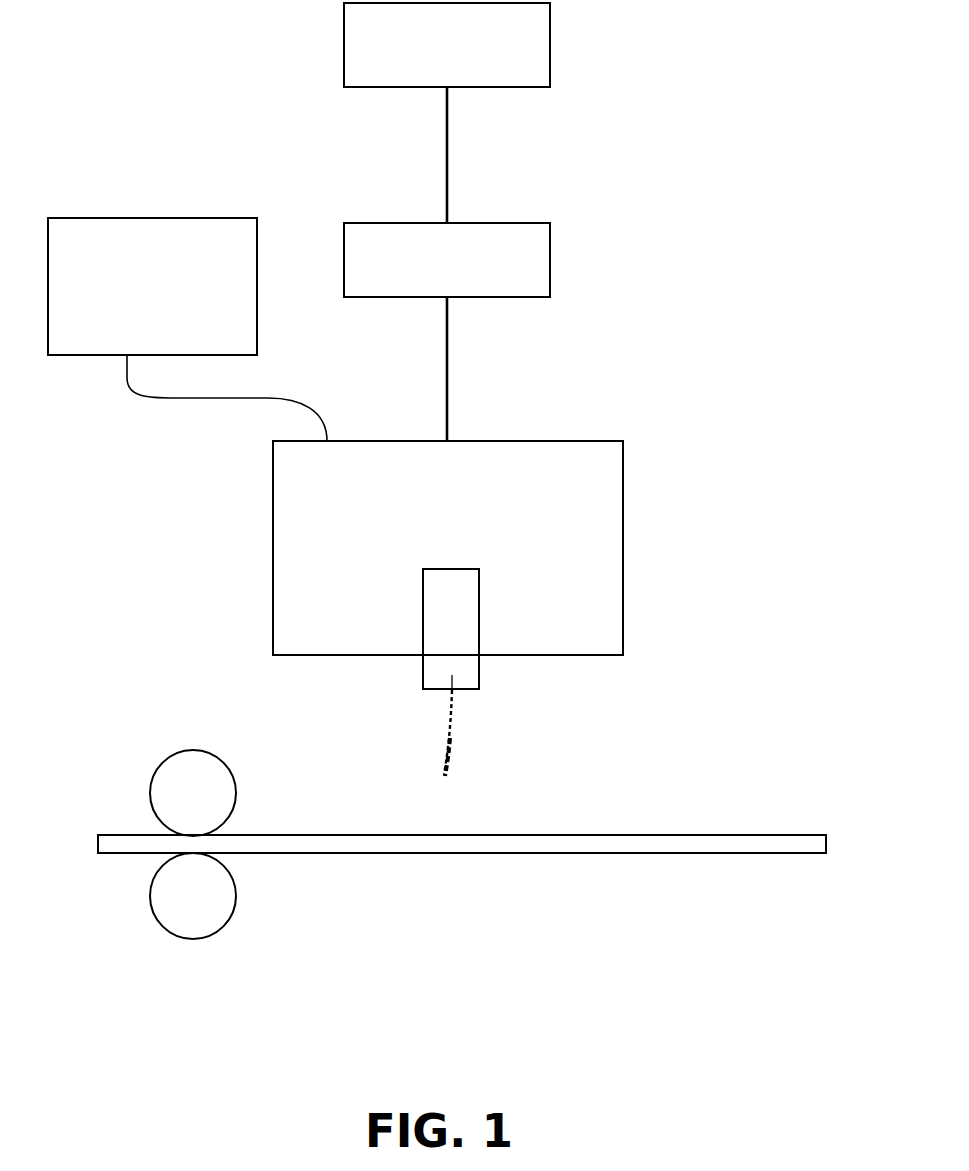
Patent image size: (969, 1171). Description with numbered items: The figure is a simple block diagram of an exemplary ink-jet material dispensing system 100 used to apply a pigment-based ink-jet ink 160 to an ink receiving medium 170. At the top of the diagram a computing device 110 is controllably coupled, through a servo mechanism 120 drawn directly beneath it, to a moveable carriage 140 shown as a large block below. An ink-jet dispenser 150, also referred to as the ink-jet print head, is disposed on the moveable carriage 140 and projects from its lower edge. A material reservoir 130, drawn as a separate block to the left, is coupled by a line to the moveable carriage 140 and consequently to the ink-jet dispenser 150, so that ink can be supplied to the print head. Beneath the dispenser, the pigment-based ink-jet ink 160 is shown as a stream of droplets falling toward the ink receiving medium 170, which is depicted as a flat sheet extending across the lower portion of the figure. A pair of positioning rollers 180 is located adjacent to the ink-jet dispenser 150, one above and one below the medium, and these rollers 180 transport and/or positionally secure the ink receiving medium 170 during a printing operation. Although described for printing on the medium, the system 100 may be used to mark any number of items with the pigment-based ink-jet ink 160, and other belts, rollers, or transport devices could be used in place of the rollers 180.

The ink-jet material dispensing system 100 is at (790, 160).
The computing device 110 is at (550, 43).
The servo mechanism 120 is at (550, 260).
The material reservoir 130 is at (187, 329).
The moveable carriage 140 is at (448, 548).
The ink-jet dispenser 150 is at (479, 602).
The pigment-based ink-jet ink 160 is at (452, 722).
The ink receiving medium 170 is at (573, 835).
The rollers 180 is at (218, 930).